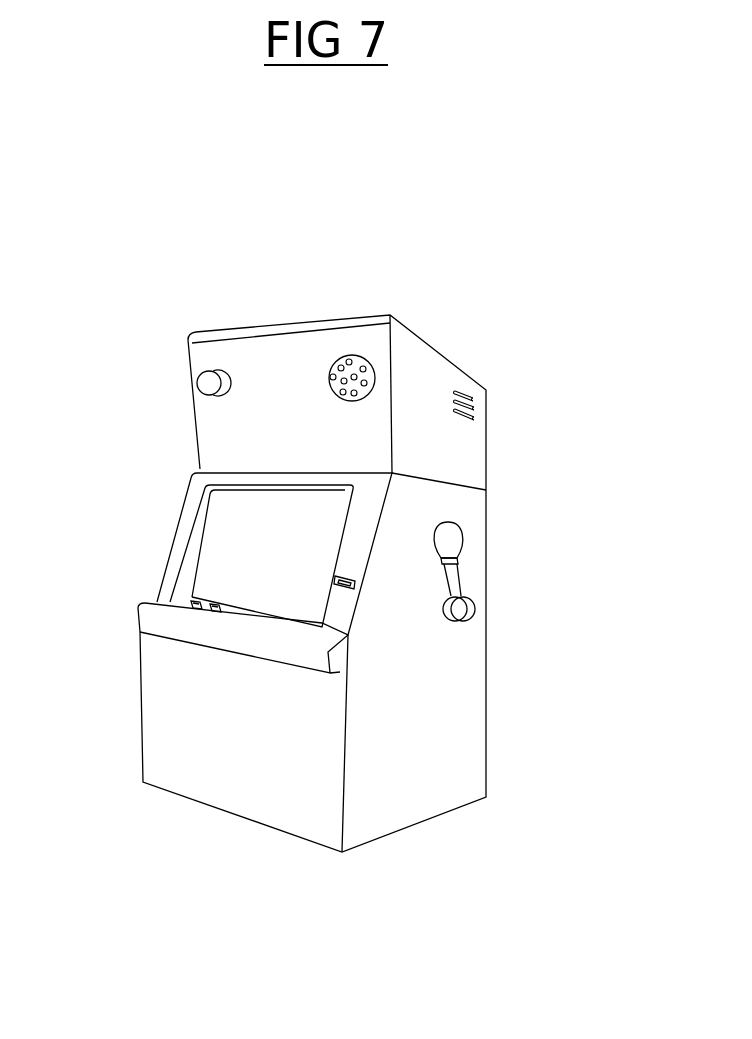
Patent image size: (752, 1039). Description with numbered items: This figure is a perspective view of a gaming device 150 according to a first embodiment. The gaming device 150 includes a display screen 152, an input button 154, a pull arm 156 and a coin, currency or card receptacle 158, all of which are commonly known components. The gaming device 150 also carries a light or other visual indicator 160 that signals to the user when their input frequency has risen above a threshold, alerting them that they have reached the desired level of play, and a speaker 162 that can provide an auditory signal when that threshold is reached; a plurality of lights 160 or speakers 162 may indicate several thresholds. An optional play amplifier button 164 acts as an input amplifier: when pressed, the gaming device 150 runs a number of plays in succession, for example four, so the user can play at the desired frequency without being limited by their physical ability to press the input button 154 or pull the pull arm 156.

The gaming device 150 is at (357, 233).
The display screen 152 is at (350, 507).
The input button 154 is at (193, 600).
The pull arm 156 is at (457, 576).
The coin, currency or card receptacle 158 is at (355, 585).
The light or visual indicator 160 is at (202, 372).
The speaker 162 is at (366, 368).
The play amplifier button 164 is at (190, 608).